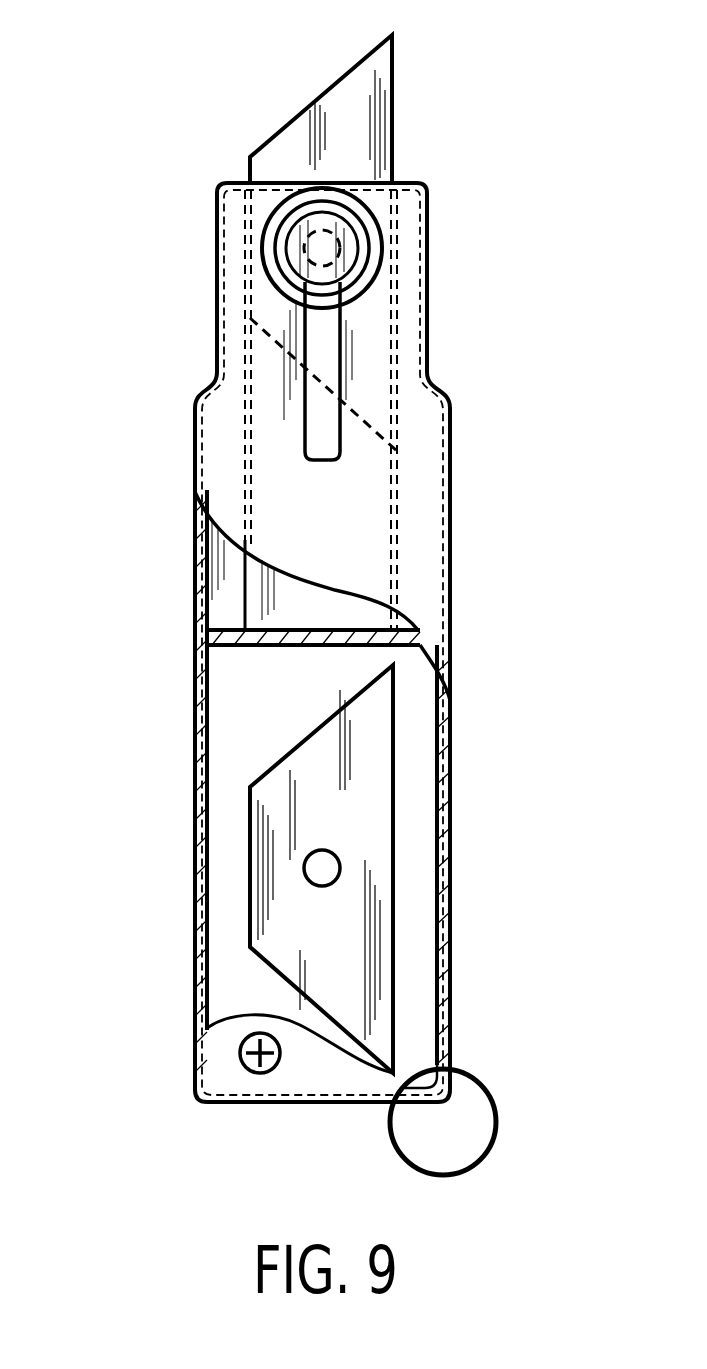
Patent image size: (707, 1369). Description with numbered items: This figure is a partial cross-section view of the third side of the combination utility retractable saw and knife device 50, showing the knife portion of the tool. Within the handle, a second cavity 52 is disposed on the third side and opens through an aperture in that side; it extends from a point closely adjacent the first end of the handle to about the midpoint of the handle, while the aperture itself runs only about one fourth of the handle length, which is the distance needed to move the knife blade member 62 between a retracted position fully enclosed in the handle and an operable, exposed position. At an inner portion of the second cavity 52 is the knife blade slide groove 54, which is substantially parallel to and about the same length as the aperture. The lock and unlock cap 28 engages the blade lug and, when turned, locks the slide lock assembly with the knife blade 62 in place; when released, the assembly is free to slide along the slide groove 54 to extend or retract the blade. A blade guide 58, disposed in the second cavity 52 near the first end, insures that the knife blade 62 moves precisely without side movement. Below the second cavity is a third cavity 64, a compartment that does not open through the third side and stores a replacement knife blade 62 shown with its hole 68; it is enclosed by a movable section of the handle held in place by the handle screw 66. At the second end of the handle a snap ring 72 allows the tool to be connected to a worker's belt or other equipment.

The combination utility retractable saw and knife device 50 is at (495, 130).
The second cavity 52 is at (418, 592).
The lock and unlock cap 28 is at (280, 238).
The knife blade slide groove 54 is at (325, 352).
The blade guide 58 is at (400, 440).
The knife blade member 62 is at (352, 88).
The third cavity 64 is at (240, 700).
The handle screw 66 is at (245, 1060).
The blade hole 68 is at (333, 850).
The snap ring 72 is at (498, 1108).